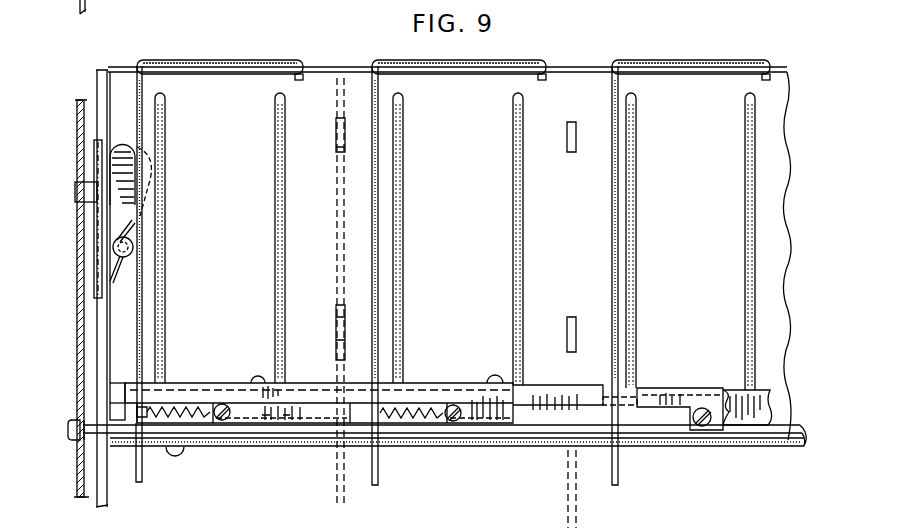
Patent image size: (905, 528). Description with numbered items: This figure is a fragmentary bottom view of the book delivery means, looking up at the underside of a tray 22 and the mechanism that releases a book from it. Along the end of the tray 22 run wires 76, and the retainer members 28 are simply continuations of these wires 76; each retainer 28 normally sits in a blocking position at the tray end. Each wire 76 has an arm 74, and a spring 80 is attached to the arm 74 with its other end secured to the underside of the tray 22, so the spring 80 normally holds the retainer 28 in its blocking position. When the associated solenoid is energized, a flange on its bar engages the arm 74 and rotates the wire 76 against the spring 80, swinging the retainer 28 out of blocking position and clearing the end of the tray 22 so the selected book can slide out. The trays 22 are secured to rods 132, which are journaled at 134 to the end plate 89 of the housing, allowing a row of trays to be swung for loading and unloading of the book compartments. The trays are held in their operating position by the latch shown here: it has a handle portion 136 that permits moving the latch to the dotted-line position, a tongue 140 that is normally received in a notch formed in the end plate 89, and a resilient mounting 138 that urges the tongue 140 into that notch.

The tray 22 is at (328, 80).
The retainer member 28 is at (150, 60).
The arm 74 is at (378, 457).
The wire 76 is at (143, 324).
The spring 80 is at (421, 416).
The end plate 89 is at (77, 316).
The rod 132 is at (739, 432).
The journal 134 is at (68, 428).
The handle portion 136 is at (125, 149).
The resilient mounting 138 is at (127, 262).
The tongue 140 is at (75, 182).